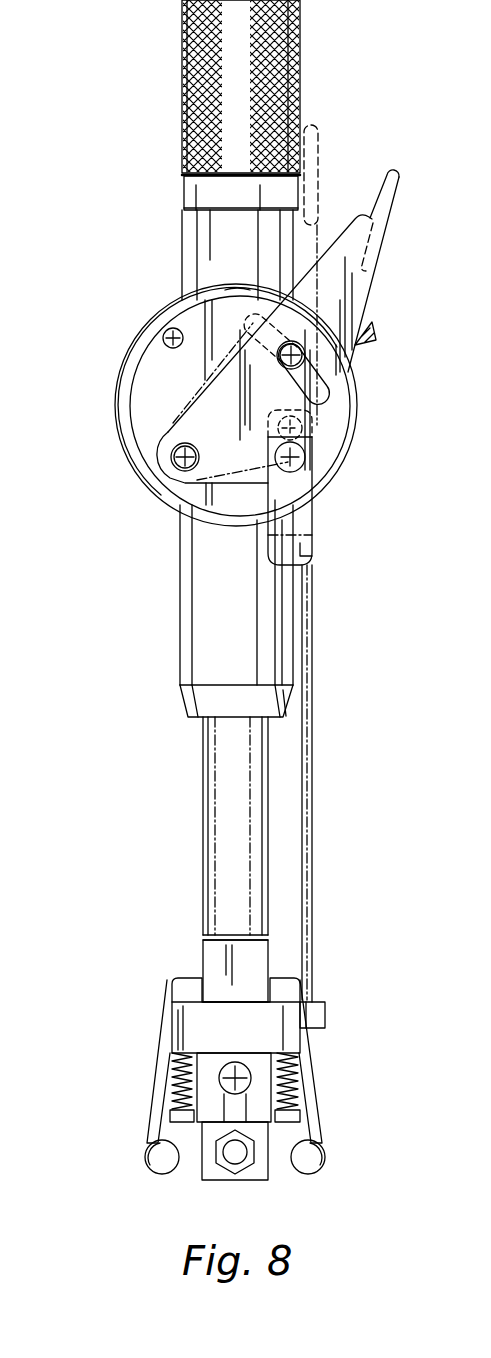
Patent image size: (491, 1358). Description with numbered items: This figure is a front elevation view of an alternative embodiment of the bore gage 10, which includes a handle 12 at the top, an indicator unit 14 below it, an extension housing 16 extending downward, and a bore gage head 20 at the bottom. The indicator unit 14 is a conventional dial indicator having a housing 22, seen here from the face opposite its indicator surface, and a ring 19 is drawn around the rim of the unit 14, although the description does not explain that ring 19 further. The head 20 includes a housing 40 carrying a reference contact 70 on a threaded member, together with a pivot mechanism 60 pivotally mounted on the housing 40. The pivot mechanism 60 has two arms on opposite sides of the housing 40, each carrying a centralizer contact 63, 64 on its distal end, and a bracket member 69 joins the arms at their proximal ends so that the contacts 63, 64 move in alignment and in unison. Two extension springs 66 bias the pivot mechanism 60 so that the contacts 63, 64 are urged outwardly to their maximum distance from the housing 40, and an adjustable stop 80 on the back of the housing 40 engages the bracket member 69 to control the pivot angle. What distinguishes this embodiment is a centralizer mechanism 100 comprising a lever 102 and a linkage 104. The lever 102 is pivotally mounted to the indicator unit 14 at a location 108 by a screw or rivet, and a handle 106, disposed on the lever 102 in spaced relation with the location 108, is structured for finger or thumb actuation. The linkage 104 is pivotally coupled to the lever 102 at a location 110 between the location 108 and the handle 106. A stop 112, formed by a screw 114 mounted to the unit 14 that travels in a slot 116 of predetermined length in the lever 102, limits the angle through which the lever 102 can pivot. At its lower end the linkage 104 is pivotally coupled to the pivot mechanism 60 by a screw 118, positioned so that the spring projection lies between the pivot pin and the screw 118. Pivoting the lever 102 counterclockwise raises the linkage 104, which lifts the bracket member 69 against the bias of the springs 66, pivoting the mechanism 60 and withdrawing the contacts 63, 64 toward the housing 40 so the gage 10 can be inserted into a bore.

The bore gage 10 is at (134, 582).
The handle 12 is at (302, 33).
The indicator unit 14 is at (206, 405).
The extension housing 16 is at (202, 857).
The ring 19 is at (137, 385).
The bore gage head 20 is at (211, 1087).
The housing 22 is at (181, 641).
The housing 40 is at (205, 947).
The pivot mechanism 60 is at (192, 996).
The centralizer contact 63 is at (150, 1164).
The centralizer contact 64 is at (318, 1165).
The extension spring 66 is at (178, 1085).
The bracket member 69 is at (200, 1028).
The reference contact 70 is at (232, 1172).
The adjustable stop 80 is at (215, 1058).
The centralizer mechanism 100 is at (275, 571).
The lever 102 is at (376, 285).
The linkage 104 is at (313, 800).
The handle 106 is at (393, 172).
The location 108 is at (178, 468).
The location 110 is at (306, 460).
The stop 112 is at (330, 394).
The screw 114 is at (223, 289).
The slot 116 is at (318, 378).
The screw 118 is at (324, 1020).